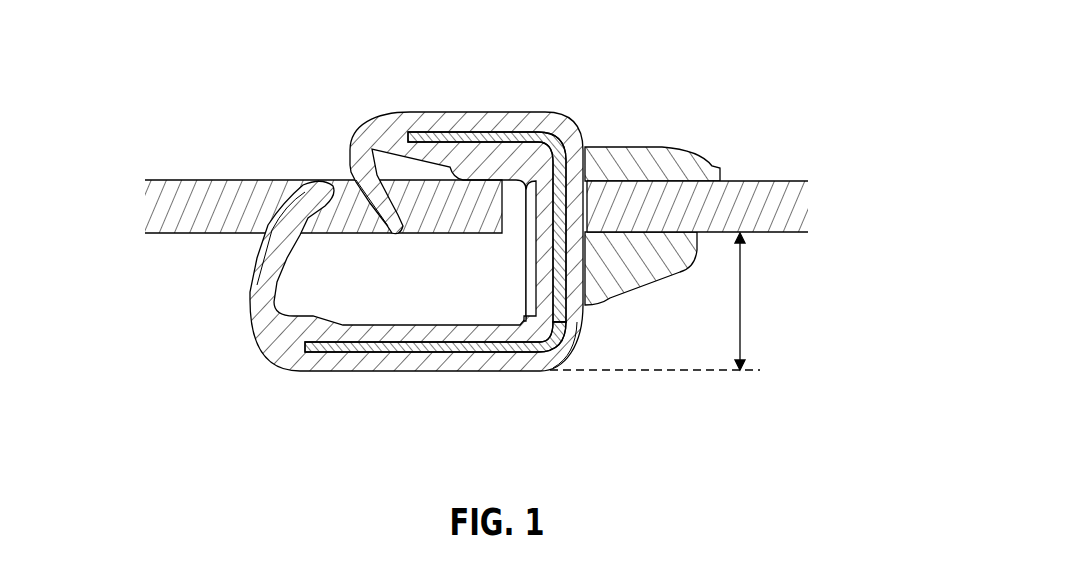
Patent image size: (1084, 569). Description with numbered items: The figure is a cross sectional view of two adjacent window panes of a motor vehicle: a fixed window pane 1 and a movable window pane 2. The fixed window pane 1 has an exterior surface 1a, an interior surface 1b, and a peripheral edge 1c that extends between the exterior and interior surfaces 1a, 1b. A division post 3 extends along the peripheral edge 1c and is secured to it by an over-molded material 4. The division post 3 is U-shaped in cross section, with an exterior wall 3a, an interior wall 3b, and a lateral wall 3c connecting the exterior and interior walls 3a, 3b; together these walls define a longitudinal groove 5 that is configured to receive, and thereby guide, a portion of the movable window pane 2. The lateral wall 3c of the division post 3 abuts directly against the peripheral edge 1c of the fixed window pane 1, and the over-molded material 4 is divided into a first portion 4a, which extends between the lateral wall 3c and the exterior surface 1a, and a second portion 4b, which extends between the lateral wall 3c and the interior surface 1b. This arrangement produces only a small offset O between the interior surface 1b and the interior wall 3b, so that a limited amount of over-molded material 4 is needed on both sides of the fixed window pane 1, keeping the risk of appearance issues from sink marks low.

The fixed window pane 1 is at (797, 178).
The exterior surface 1a is at (757, 180).
The interior surface 1b is at (768, 234).
The peripheral edge 1c is at (589, 207).
The movable window pane 2 is at (190, 178).
The division post 3 is at (484, 382).
The exterior wall 3a is at (505, 125).
The interior wall 3b is at (412, 362).
The lateral wall 3c is at (538, 278).
The over-molded material 4 is at (655, 253).
The first portion 4a is at (637, 148).
The second portion 4b is at (670, 265).
The longitudinal groove 5 is at (397, 298).
The offset O is at (745, 300).